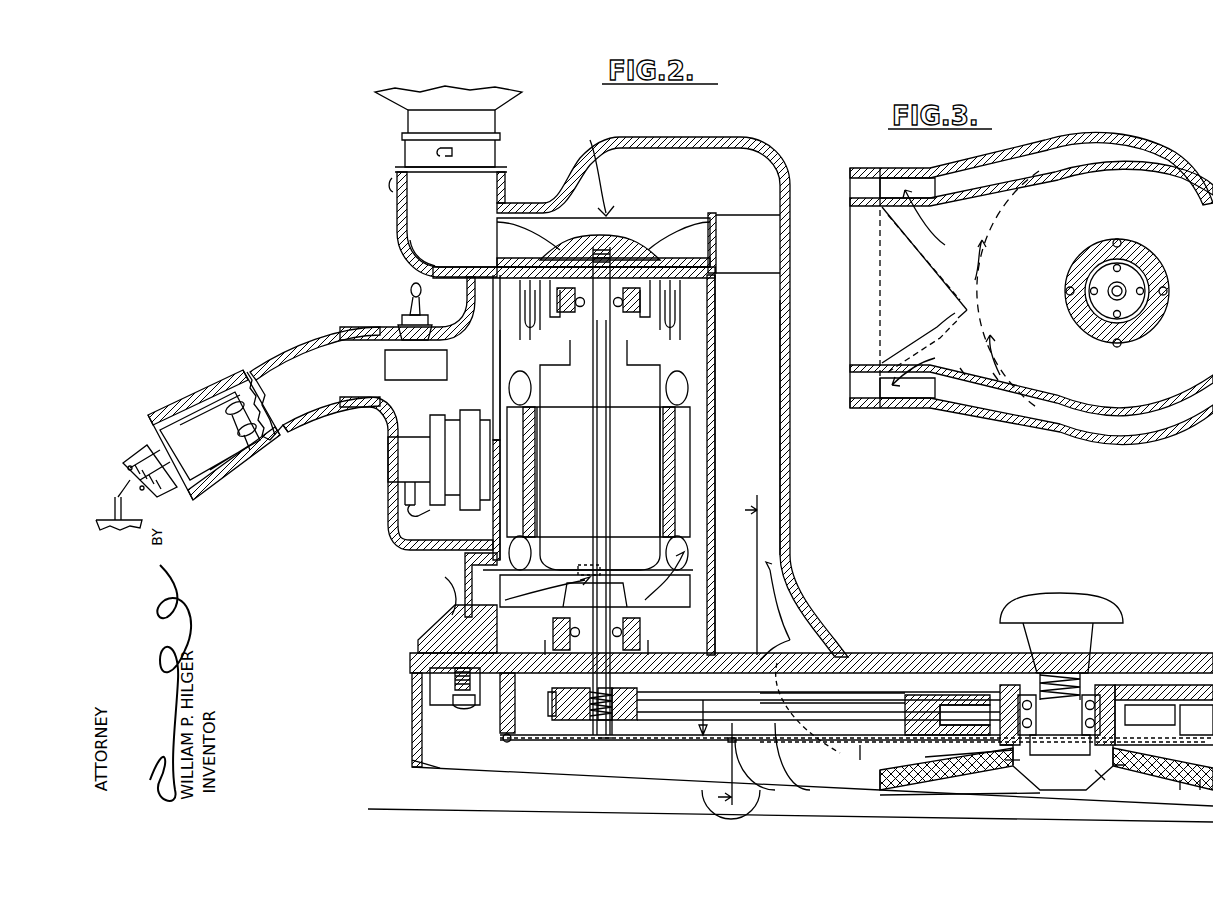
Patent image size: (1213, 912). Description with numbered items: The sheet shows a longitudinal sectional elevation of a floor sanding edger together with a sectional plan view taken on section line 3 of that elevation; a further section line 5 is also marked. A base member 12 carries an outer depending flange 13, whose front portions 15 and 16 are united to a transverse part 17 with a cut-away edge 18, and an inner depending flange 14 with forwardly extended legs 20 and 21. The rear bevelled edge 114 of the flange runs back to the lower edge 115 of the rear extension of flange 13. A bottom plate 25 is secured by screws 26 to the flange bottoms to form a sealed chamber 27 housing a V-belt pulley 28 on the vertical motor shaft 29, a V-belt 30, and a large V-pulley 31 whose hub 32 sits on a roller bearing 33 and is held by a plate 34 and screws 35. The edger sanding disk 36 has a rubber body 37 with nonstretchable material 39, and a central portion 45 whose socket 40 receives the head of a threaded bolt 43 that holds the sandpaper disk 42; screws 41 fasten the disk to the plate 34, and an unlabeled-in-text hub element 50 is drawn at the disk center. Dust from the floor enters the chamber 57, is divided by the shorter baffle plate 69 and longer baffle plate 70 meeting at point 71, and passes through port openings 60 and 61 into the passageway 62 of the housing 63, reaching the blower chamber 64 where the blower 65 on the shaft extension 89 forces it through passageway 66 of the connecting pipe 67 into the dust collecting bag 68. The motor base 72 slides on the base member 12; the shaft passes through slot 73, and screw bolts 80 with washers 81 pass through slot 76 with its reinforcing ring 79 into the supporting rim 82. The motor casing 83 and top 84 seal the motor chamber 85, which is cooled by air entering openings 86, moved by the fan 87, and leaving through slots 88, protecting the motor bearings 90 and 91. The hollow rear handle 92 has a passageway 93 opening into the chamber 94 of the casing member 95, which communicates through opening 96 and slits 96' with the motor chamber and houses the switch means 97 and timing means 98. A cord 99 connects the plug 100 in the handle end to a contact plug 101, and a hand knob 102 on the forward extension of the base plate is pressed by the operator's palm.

In FIG. 2, the section line 3— 3 is at (818, 715).
In FIG. 2, the section line 5— 5 is at (737, 657).
In FIG. 2, the base member 12 is at (900, 673).
In FIG. 2, the outer depending flange 13 is at (412, 722).
In FIG. 2, the inner depending flange 14 is at (515, 692).
In FIG. 3, the outer flange front portion 15 is at (1125, 122).
In FIG. 2, the outer flange front portion 16 is at (887, 795).
In FIG. 3, the outer flange front portion 16 is at (1143, 445).
In FIG. 3, the transverse part 17 is at (1095, 290).
In FIG. 2, the cut-away edge 18 is at (1208, 788).
In FIG. 3, the inner flange leg 20 is at (1125, 170).
In FIG. 3, the inner flange leg 21 is at (1080, 410).
In FIG. 2, the bottom plate 25 is at (667, 742).
In FIG. 2, the screws 26 is at (507, 742).
In FIG. 2, the sealed chamber 27 is at (775, 723).
In FIG. 2, the V-belt pulley 28 is at (585, 722).
In FIG. 2, the motor shaft 29 is at (587, 722).
In FIG. 2, the V-belt 30 is at (830, 707).
In FIG. 2, the large V-pulley 31 is at (952, 693).
In FIG. 2, the hub 32 is at (1118, 728).
In FIG. 2, the roller bearing 33 is at (1020, 710).
In FIG. 2, the plate 34 is at (1093, 787).
In FIG. 2, the screws 35 is at (980, 717).
In FIG. 2, the edger sanding disk 36 is at (970, 787).
In FIG. 2, the rubber body 37 is at (953, 788).
In FIG. 3, the rubber body 37 is at (995, 373).
In FIG. 2, the nonstretchable material 39 is at (933, 760).
In FIG. 2, the socket 40 is at (1012, 777).
In FIG. 2, the screws 41 is at (982, 758).
In FIG. 2, the sandpaper disk 42 is at (930, 783).
In FIG. 2, the threaded bolt 43 is at (1060, 787).
In FIG. 2, the central portion 45 is at (1040, 740).
In FIG. 2, the hub nut 50 is at (1057, 773).
In FIG. 3, the chamber 57 is at (963, 368).
In FIG. 3, the port opening 60 is at (897, 180).
In FIG. 3, the port opening 61 is at (893, 398).
In FIG. 2, the passageway 62 is at (773, 477).
In FIG. 2, the housing 63 is at (787, 422).
In FIG. 2, the blower chamber 64 is at (592, 166).
In FIG. 2, the blower 65 is at (668, 262).
In FIG. 2, the passageway 66 is at (407, 212).
In FIG. 2, the connecting pipe 67 is at (406, 246).
In FIG. 2, the dust collecting bag 68 is at (400, 96).
In FIG. 3, the shorter baffle plate 69 is at (908, 362).
In FIG. 2, the longer baffle plate 70 is at (815, 773).
In FIG. 3, the longer baffle plate 70 is at (907, 243).
In FIG. 3, the baffle meeting point 71 is at (957, 312).
In FIG. 2, the motor base 72 is at (780, 650).
In FIG. 2, the slot 73 is at (557, 637).
In FIG. 2, the slot 76 is at (445, 675).
In FIG. 2, the reinforcing ring 79 is at (860, 745).
In FIG. 2, the screw bolt 80 is at (447, 682).
In FIG. 2, the washer 81 is at (477, 692).
In FIG. 2, the supporting rim 82 is at (467, 628).
In FIG. 2, the motor casing 83 is at (717, 373).
In FIG. 2, the motor chamber top 84 is at (690, 287).
In FIG. 2, the motor chamber 85 is at (513, 308).
In FIG. 2, the openings 86 is at (462, 575).
In FIG. 2, the fan 87 is at (662, 590).
In FIG. 2, the slots 88 is at (553, 338).
In FIG. 2, the shaft extension 89 is at (593, 295).
In FIG. 2, the motor bearing 90 is at (655, 637).
In FIG. 2, the motor bearing 91 is at (597, 340).
In FIG. 2, the rear handle 92 is at (283, 352).
In FIG. 2, the passageway 93 is at (293, 423).
In FIG. 2, the chamber 94 is at (393, 415).
In FIG. 2, the casing member 95 is at (395, 538).
In FIG. 2, the opening 96 is at (471, 445).
In FIG. 2, the slits 96' is at (255, 450).
In FIG. 2, the switch means 97 is at (408, 296).
In FIG. 2, the timing means 98 is at (430, 472).
In FIG. 2, the cord 99 is at (117, 497).
In FIG. 2, the plug 100 is at (180, 428).
In FIG. 2, the contact plug 101 is at (108, 530).
In FIG. 2, the hand knob 102 is at (1093, 603).
In FIG. 2, the rear bevelled edge 114 is at (603, 780).
In FIG. 2, the lower edge 115 is at (420, 768).